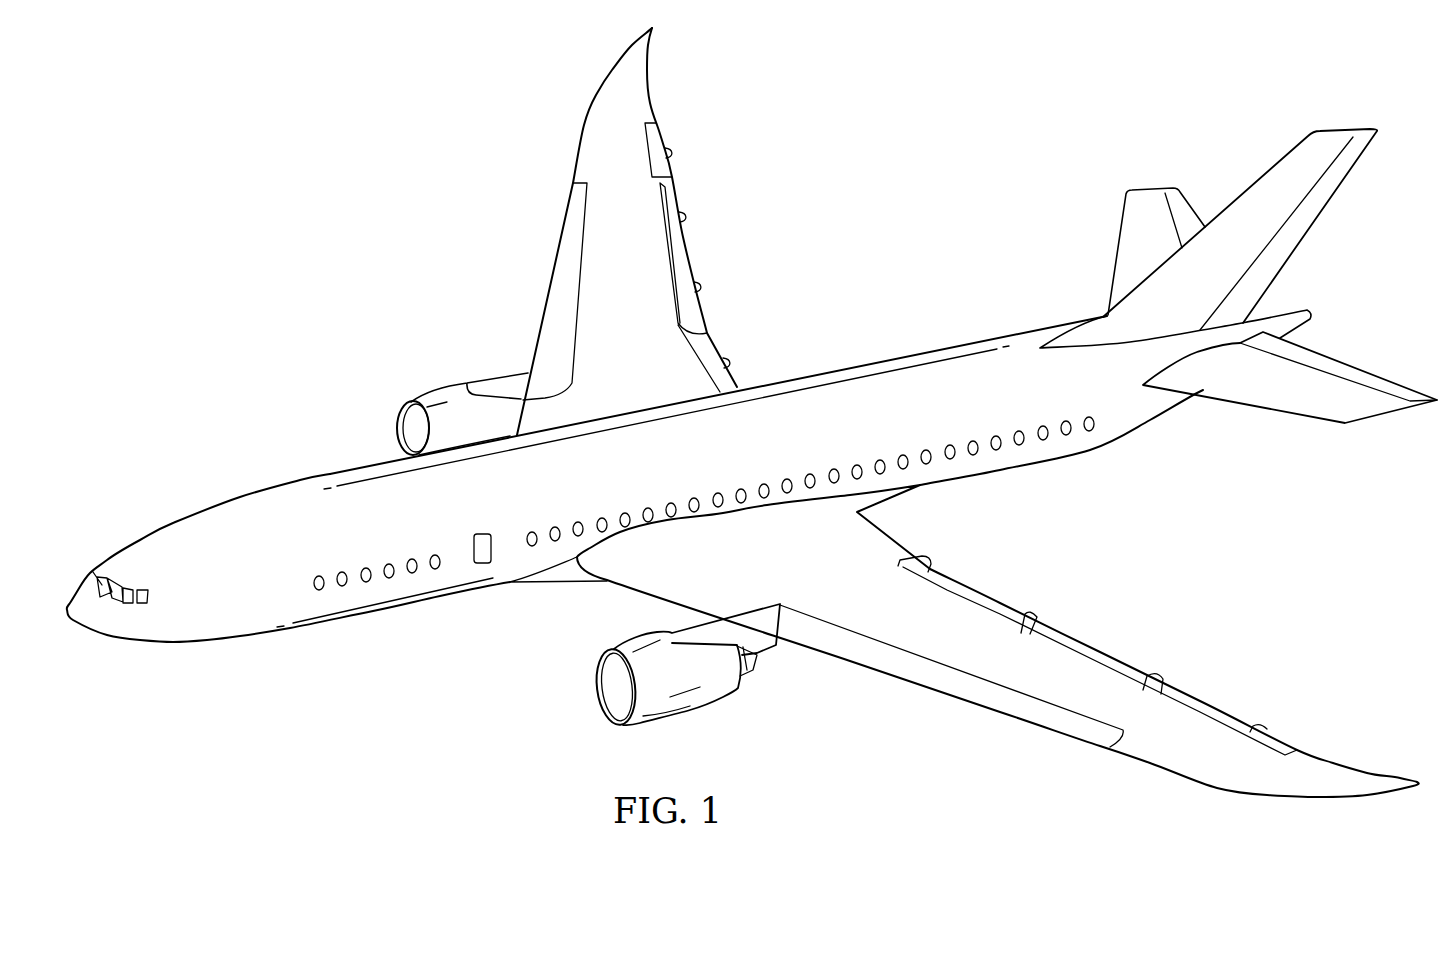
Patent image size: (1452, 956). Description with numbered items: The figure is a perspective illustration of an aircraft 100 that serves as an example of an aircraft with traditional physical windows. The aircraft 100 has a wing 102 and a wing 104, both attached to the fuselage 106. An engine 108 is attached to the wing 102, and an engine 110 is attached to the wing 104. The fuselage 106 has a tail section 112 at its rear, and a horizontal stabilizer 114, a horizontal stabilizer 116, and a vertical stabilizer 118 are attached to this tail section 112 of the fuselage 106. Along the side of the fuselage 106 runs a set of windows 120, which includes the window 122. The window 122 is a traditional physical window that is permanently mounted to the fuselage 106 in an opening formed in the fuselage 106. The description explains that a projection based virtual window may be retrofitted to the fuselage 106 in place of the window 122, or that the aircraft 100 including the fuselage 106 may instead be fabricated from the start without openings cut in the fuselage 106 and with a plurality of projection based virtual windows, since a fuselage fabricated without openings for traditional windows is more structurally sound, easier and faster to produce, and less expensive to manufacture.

The aircraft 100 is at (343, 180).
The wing 102 is at (583, 120).
The wing 104 is at (1293, 797).
The fuselage 106 is at (250, 493).
The engine 108 is at (440, 387).
The engine 110 is at (690, 713).
The tail section 112 is at (1183, 462).
The horizontal stabilizer 114 is at (1118, 247).
The horizontal stabilizer 116 is at (1293, 410).
The vertical stabilizer 118 is at (1322, 218).
The set of windows 120 is at (818, 460).
The window 122 is at (738, 490).